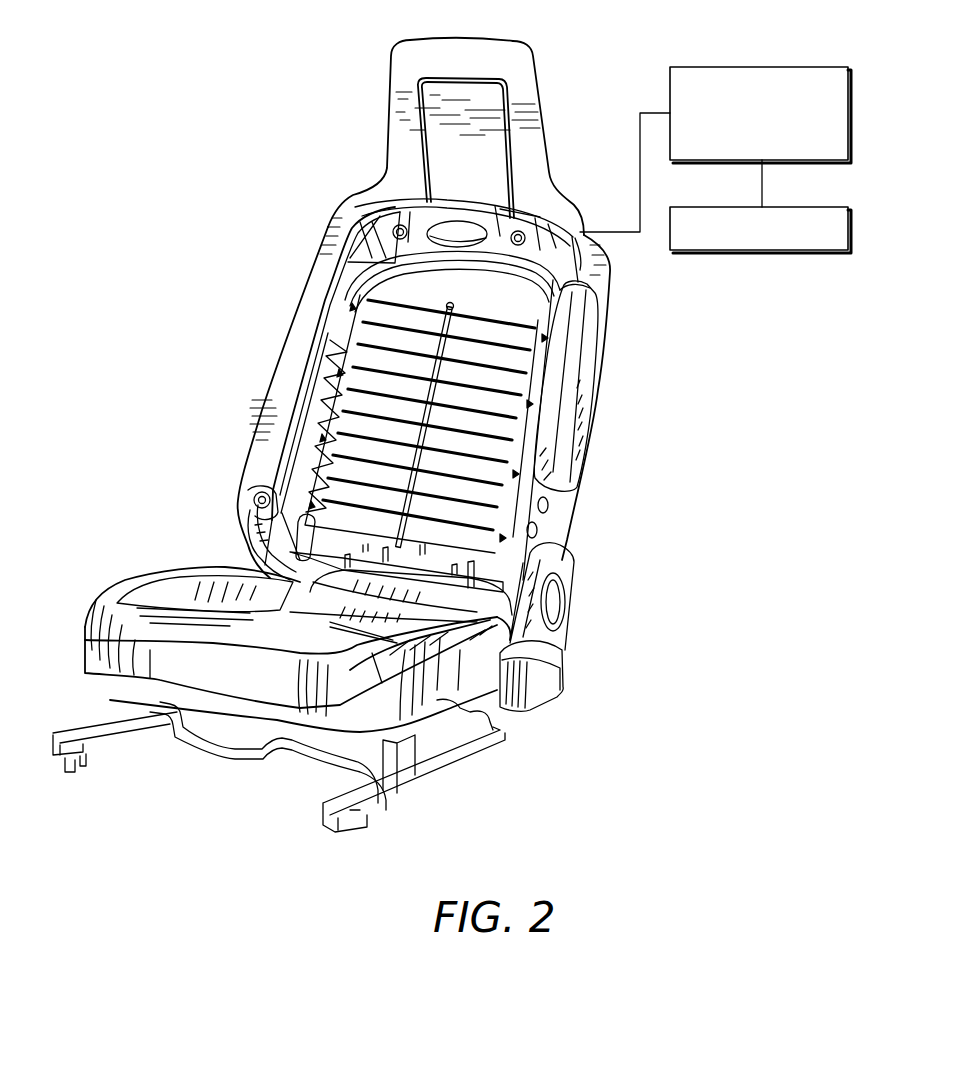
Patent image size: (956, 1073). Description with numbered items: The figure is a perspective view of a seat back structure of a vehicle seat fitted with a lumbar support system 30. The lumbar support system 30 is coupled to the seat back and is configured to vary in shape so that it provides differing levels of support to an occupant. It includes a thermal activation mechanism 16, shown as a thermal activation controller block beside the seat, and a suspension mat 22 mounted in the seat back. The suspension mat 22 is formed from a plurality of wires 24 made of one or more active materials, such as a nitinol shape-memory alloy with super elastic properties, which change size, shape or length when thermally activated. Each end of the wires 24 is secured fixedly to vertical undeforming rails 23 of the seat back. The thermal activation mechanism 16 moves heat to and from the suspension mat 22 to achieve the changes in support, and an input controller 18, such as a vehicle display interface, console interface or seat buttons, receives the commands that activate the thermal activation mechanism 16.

The thermal activation mechanism 16 is at (718, 63).
The input controller 18 is at (718, 203).
The suspension mat 22 is at (397, 361).
The vertical undeforming rails 23 is at (355, 290).
The wires 24 is at (480, 455).
The lumbar support system 30 is at (357, 435).